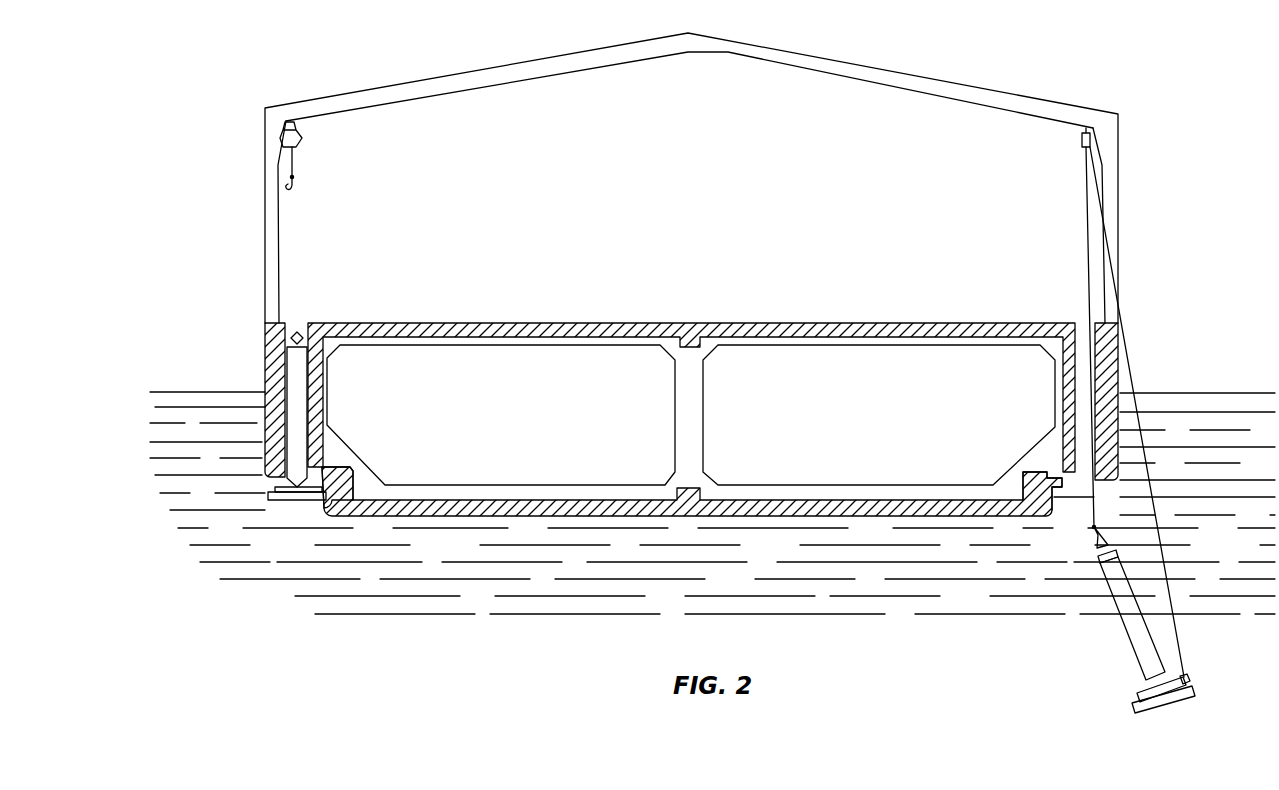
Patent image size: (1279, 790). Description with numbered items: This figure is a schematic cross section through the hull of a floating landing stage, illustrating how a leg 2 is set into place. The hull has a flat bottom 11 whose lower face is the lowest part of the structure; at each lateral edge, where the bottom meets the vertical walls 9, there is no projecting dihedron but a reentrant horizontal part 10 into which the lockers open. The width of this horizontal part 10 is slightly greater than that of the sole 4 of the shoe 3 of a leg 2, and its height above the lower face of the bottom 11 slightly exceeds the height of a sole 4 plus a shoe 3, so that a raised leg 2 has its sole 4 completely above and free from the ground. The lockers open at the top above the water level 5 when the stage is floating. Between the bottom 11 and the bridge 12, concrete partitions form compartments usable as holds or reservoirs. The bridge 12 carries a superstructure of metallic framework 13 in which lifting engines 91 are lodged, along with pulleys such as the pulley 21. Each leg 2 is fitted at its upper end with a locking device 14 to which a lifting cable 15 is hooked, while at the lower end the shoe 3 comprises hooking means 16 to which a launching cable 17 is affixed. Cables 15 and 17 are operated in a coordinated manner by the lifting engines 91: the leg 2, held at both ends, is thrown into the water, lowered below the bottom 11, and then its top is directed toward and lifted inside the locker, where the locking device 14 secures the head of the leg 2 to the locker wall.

The leg 2 is at (298, 413).
The shoe 3 is at (275, 489).
The sole 4 is at (282, 497).
The water level 5 is at (200, 401).
The vertical wall 9 is at (1068, 404).
The horizontal part 10 is at (324, 470).
The bottom 11 is at (524, 505).
The bridge 12 is at (669, 331).
The metallic framework 13 is at (868, 80).
The locking device 14 is at (298, 326).
The lifting cable 15 is at (1088, 257).
The hooking means 16 is at (1198, 678).
The launching cable 17 is at (1171, 517).
The pulley 21 is at (1081, 138).
The lifting engine 91 is at (303, 140).